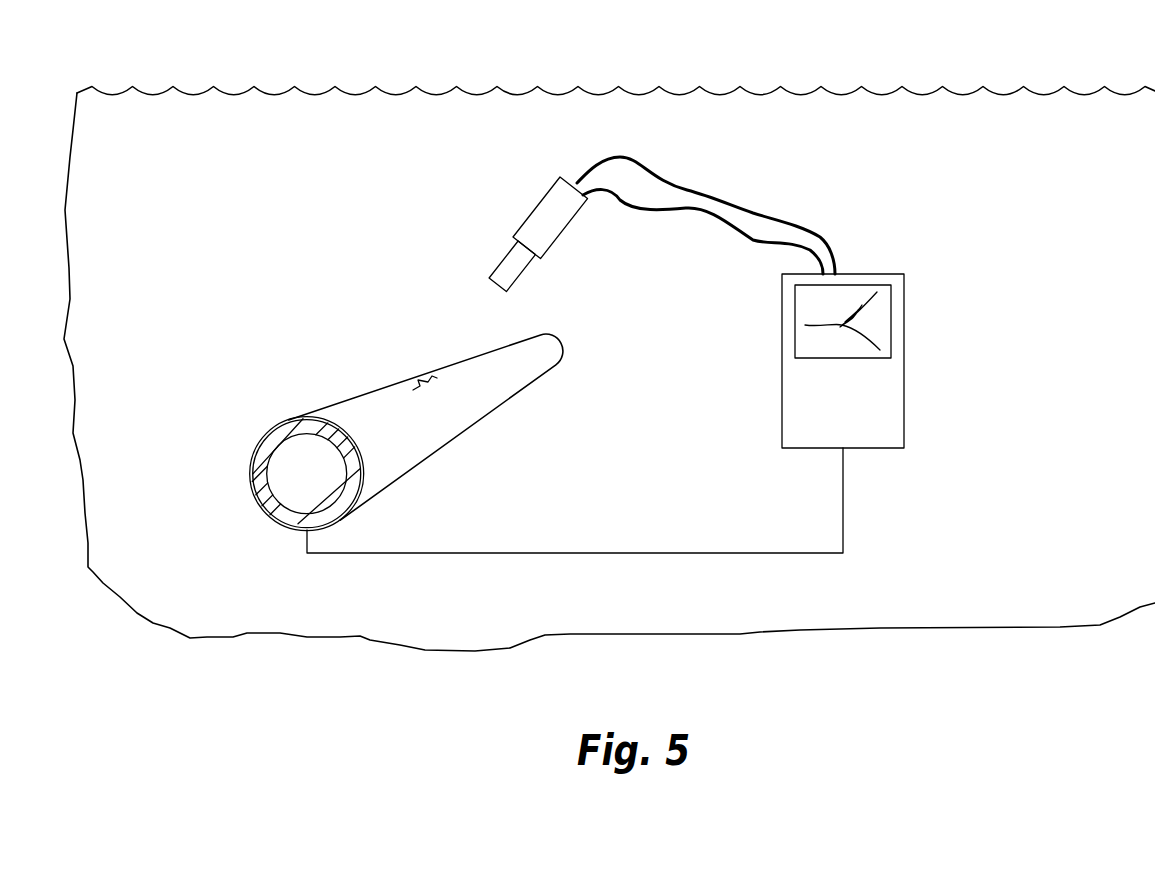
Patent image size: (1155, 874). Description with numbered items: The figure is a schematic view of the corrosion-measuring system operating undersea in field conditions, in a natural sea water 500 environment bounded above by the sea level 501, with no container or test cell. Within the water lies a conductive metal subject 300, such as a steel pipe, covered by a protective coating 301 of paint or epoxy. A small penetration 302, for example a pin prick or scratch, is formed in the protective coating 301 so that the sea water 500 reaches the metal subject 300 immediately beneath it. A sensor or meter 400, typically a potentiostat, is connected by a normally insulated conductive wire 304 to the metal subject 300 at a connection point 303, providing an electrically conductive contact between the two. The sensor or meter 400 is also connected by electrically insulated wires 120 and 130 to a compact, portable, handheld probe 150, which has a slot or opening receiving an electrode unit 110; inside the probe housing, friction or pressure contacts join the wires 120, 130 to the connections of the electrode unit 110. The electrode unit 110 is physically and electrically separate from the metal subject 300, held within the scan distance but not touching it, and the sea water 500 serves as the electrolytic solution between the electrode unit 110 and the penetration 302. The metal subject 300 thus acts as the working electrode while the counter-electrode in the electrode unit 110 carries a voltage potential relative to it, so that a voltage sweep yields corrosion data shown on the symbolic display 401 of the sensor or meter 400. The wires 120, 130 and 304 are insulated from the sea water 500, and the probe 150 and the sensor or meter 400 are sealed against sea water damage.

The sea level 501 is at (462, 85).
The sea water 500 is at (227, 222).
The conductive metal subject 300 is at (252, 475).
The protective coating 301 is at (267, 433).
The penetration 302 is at (423, 368).
The connection point 303 is at (290, 530).
The conductive wire 304 is at (527, 548).
The sensor or meter 400 is at (905, 417).
The display 401 is at (883, 318).
The probe 150 is at (553, 228).
The electrode unit 110 is at (505, 262).
The electrically insulated wire 120 is at (730, 199).
The electrically insulated wire 130 is at (667, 212).